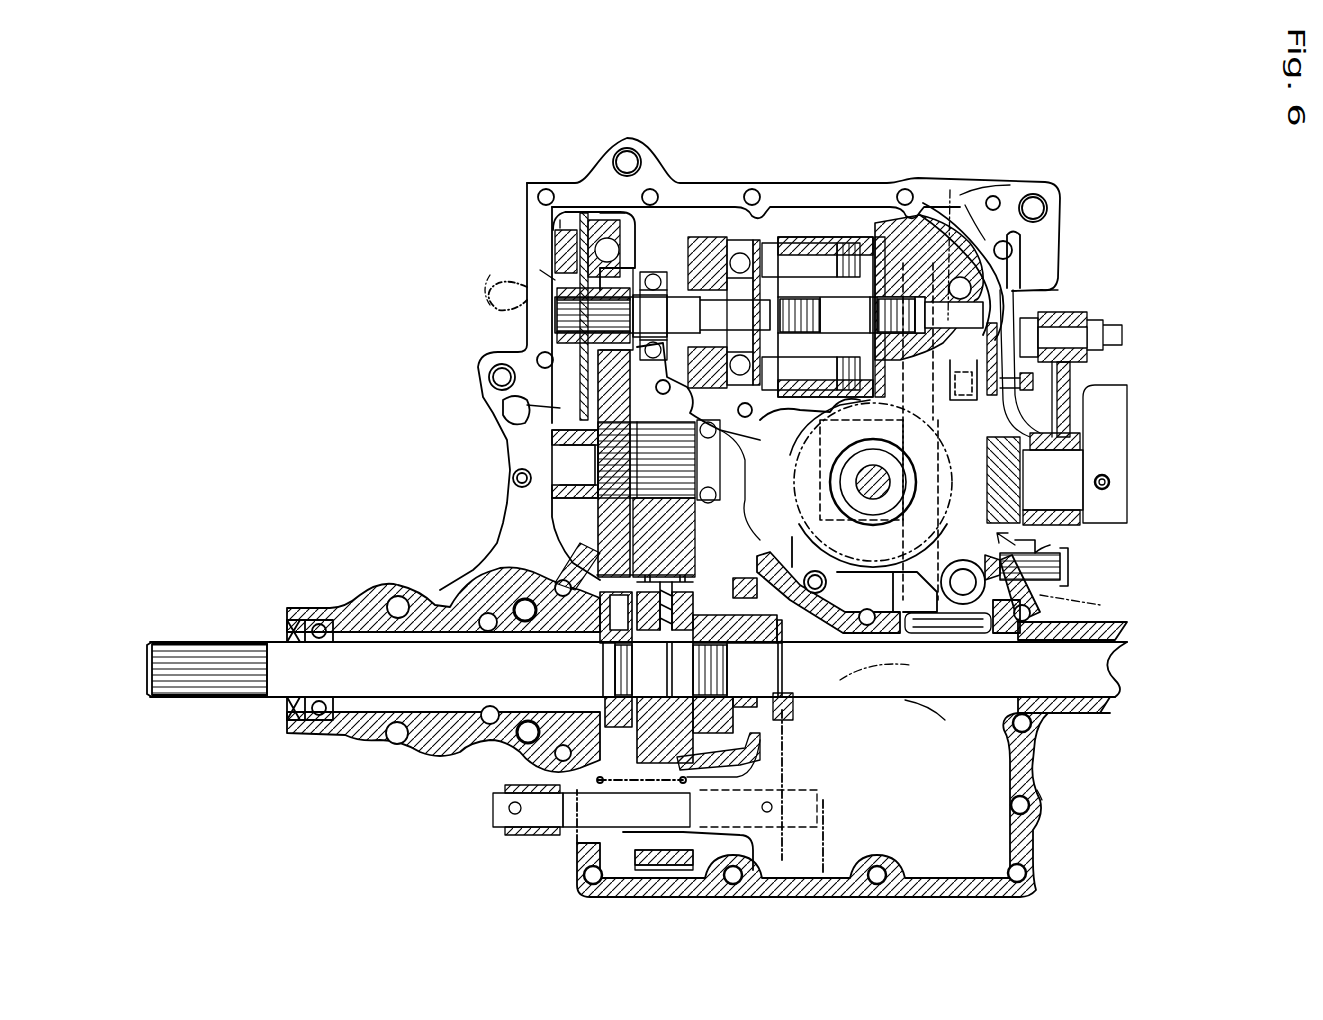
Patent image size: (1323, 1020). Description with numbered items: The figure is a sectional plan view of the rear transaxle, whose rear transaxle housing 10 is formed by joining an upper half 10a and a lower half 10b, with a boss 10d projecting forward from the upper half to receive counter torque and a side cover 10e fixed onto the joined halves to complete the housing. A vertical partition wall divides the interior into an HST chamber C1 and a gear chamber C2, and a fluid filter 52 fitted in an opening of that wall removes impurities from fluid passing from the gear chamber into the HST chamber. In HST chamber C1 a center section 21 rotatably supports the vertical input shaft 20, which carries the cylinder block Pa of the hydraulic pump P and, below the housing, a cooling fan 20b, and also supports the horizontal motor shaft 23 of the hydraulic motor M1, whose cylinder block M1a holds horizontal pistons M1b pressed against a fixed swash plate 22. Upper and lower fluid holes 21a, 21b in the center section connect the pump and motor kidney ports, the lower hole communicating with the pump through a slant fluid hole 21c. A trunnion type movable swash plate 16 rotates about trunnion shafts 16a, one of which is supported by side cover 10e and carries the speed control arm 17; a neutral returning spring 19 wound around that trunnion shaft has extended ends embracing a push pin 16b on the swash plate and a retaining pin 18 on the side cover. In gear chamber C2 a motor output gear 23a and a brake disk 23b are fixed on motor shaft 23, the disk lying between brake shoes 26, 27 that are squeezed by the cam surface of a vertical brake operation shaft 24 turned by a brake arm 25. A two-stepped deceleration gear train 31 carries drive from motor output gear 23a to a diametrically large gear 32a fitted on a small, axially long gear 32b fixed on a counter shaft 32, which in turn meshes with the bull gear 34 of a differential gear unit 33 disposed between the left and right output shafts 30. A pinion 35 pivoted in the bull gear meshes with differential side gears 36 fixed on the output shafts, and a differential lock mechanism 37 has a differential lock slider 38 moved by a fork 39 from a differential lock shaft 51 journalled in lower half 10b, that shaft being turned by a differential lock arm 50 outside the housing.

The rear transaxle housing 10 is at (431, 200).
The upper half 10a is at (1044, 806).
The lower half 10b is at (1020, 182).
The boss 10d is at (640, 200).
The side cover 10e is at (1050, 280).
The movable swash plate 16 is at (1100, 432).
The trunnion shafts 16a is at (1058, 478).
The push pin 16b is at (1035, 420).
The speed control arm 17 is at (1118, 490).
The retaining pin 18 is at (1072, 312).
The neutral returning spring 19 is at (1072, 400).
The input shaft 20 is at (1085, 545).
The cooling fan 20b is at (907, 700).
The center section 21 is at (882, 235).
The upper fluid hole 21a is at (965, 210).
The lower fluid hole 21b is at (952, 180).
The slant fluid hole 21c is at (1020, 480).
The fixed swash plate 22 is at (718, 258).
The motor shaft 23 is at (555, 323).
The motor output gear 23a is at (655, 265).
The brake disk 23b is at (570, 228).
The brake operation shaft 24 is at (640, 230).
The brake arm 25 is at (493, 245).
The brake shoe 26 is at (590, 220).
The brake shoe 27 is at (548, 230).
The output shafts 30 is at (238, 640).
The deceleration gear train 31 is at (540, 412).
The counter shaft 32 is at (575, 463).
The diametrically large gear 32a is at (605, 512).
The diametrically small and axially long gear 32b is at (565, 385).
The differential gear unit 33 is at (560, 772).
The bull gear 34 is at (633, 860).
The pinion 35 is at (578, 590).
The differential side gears 36 is at (600, 748).
The differential lock mechanism 37 is at (793, 735).
The differential lock slider 38 is at (780, 795).
The fork 39 is at (768, 825).
The differential lock arm 50 is at (525, 835).
The differential lock shaft 51 is at (492, 810).
The fluid filter 52 is at (955, 635).
The hydraulic motor M1 is at (858, 215).
The cylinder block M1a is at (815, 255).
The horizontal pistons M1b is at (787, 240).
The HST chamber C1 is at (938, 195).
The gear chamber C2 is at (920, 828).
The hydraulic pump P is at (1015, 545).
The cylinder block Pa is at (1110, 600).